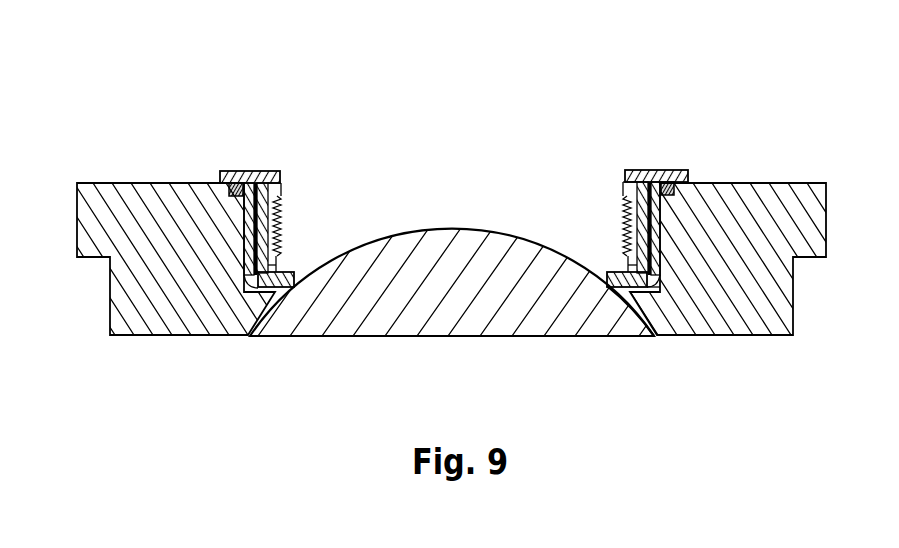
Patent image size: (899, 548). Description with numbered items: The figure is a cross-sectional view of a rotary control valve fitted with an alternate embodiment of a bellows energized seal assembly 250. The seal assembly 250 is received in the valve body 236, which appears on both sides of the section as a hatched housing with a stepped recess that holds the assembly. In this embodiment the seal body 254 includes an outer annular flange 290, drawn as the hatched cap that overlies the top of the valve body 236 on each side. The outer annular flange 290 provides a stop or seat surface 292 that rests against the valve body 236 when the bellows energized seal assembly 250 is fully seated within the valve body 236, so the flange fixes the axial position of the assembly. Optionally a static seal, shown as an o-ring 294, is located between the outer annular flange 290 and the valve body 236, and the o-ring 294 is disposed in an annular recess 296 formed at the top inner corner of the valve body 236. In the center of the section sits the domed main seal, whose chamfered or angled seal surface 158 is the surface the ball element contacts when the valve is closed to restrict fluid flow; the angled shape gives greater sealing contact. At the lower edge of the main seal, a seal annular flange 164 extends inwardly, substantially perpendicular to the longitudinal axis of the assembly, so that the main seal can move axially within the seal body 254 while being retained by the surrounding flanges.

The bellows energized seal assembly 250 is at (634, 50).
The valve body 236 is at (817, 215).
The outer annular flange 290 is at (645, 170).
The seat surface 292 is at (672, 182).
The o-ring 294 is at (229, 186).
The annular recess 296 is at (236, 195).
The seal body 254 is at (657, 210).
The seal surface 158 is at (607, 287).
The seal annular flange 164 is at (627, 280).